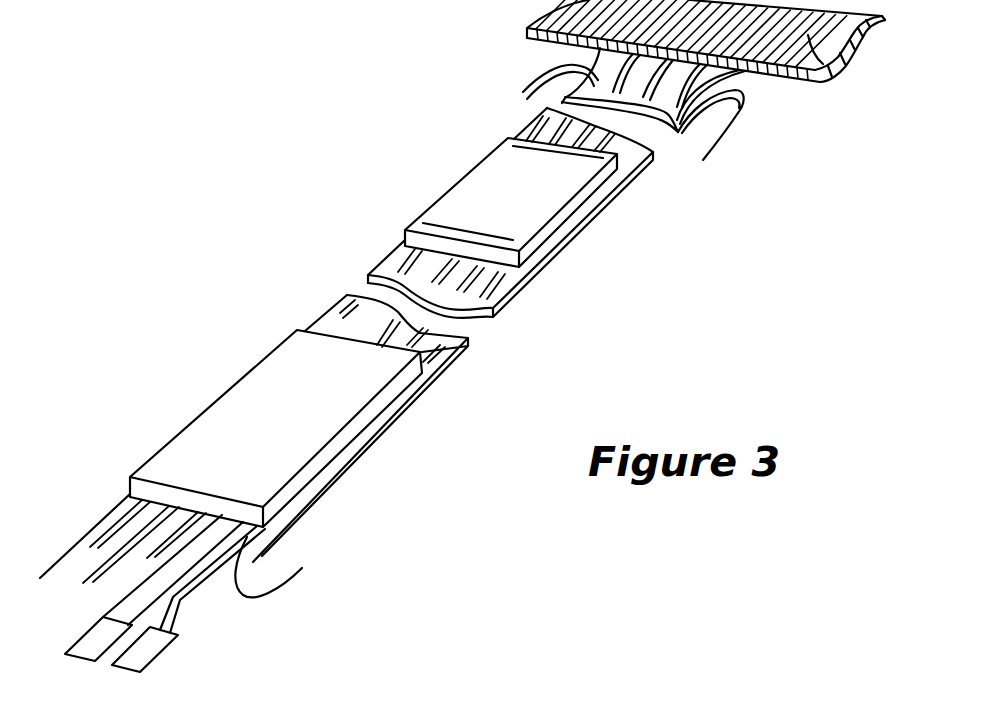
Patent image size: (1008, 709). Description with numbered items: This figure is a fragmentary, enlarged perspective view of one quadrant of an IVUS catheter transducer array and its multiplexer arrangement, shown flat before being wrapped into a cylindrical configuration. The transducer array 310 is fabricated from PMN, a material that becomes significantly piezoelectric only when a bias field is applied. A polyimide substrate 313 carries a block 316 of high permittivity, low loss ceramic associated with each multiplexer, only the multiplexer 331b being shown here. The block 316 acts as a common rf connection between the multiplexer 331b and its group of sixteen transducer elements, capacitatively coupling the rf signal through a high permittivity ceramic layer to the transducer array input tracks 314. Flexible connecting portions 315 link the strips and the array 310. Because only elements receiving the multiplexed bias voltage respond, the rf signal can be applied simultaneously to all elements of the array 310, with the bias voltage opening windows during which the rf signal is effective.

The transducer array 310 is at (842, 76).
The polyimide substrate 313 is at (358, 443).
The transducer array input tracks 314 is at (633, 160).
The flexible ribbon connector 315 is at (562, 76).
The block of high permittivity low loss ceramic 316 is at (510, 173).
The multiplexer 331b is at (293, 403).